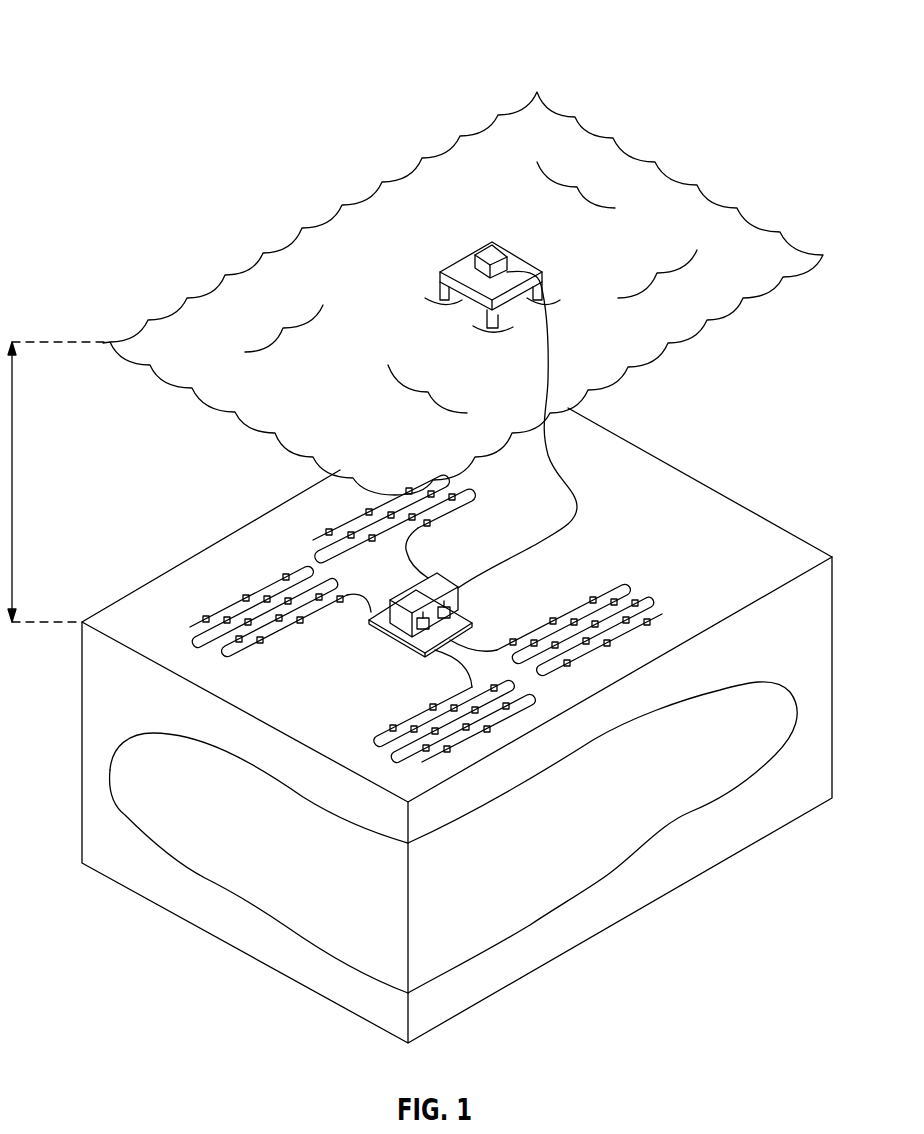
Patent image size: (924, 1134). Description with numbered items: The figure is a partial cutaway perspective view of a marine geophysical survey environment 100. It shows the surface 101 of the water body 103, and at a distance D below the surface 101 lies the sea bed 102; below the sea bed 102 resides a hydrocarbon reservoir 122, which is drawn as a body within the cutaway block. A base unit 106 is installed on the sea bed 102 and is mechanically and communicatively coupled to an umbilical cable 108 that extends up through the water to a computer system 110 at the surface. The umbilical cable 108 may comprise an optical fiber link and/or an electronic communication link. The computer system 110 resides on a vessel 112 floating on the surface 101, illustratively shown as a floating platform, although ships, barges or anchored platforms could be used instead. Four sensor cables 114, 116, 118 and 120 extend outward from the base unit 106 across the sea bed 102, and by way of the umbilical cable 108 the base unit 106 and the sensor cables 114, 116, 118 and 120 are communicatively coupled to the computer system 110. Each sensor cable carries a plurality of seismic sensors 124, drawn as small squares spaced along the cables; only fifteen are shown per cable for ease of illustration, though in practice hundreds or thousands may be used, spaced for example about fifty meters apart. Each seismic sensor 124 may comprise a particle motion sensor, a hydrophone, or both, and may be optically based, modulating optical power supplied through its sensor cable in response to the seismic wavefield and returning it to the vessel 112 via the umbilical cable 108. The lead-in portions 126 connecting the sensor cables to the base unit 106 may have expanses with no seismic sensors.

The marine geophysical survey environment 100 is at (122, 50).
The surface 101 is at (360, 401).
The sea bed 102 is at (104, 616).
The water body 103 is at (700, 433).
The distance D is at (58, 482).
The base unit 106 is at (401, 634).
The umbilical cable 108 is at (578, 508).
The computer system 110 is at (493, 244).
The vessel 112 is at (457, 267).
The sensor cable 114 is at (227, 603).
The sensor cable 116 is at (334, 529).
The sensor cable 118 is at (372, 740).
The sensor cable 120 is at (630, 583).
The hydrocarbon reservoir 122 is at (612, 823).
The seismic sensors 124 is at (281, 573).
The lead-in portions 126 is at (409, 548).